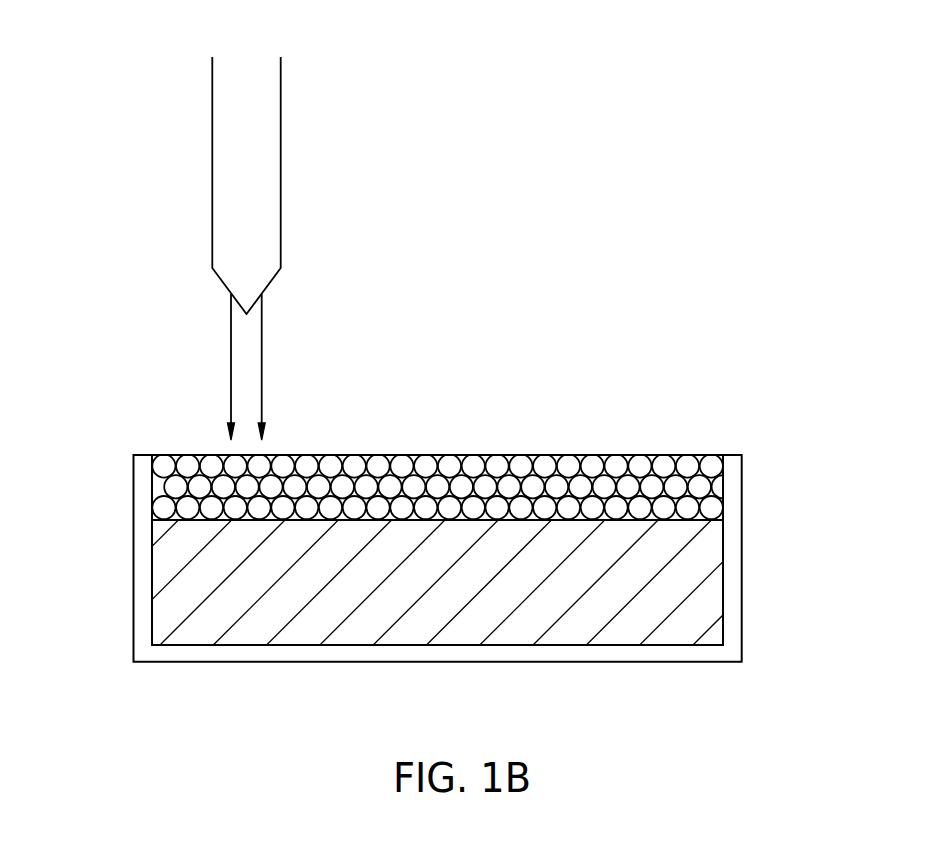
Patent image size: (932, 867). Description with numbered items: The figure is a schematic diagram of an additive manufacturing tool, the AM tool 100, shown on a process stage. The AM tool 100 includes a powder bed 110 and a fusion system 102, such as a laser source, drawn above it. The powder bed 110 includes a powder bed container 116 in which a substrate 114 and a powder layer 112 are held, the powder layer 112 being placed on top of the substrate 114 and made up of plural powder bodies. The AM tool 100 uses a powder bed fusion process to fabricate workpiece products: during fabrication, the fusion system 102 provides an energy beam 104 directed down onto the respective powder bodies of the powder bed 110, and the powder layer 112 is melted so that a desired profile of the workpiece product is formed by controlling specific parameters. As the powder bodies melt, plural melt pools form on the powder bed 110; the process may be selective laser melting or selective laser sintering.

The AM tool 100 is at (69, 55).
The fusion system 102 is at (270, 152).
The energy beam 104 is at (263, 360).
The powder bed 110 is at (480, 560).
The powder layer 112 is at (487, 486).
The substrate 114 is at (707, 583).
The powder bed container 116 is at (722, 652).